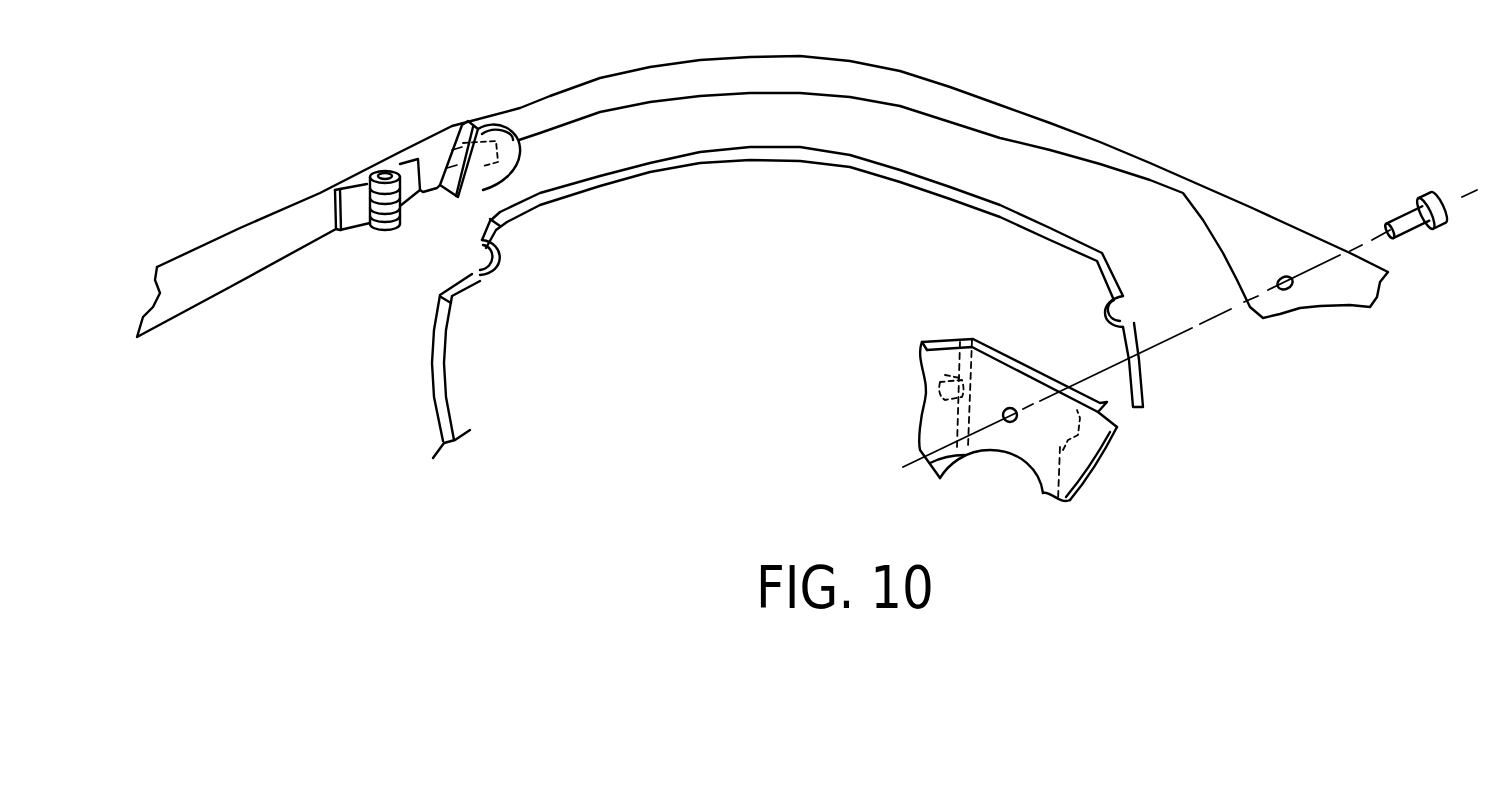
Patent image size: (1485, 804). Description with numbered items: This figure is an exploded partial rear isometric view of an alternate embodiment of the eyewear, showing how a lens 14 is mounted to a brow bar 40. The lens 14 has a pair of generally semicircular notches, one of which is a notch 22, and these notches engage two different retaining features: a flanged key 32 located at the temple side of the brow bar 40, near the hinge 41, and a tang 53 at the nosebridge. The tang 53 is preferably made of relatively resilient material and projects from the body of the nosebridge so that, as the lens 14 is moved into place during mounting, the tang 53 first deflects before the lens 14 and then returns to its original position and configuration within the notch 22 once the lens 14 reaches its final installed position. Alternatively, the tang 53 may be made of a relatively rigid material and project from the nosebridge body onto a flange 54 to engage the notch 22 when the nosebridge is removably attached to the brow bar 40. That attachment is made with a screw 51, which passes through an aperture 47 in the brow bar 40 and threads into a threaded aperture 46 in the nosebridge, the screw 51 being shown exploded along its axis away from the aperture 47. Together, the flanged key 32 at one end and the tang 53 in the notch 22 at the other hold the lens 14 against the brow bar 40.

The lens 14 is at (696, 269).
The notch 22 is at (468, 256).
The flanged key 32 is at (500, 123).
The brow bar 40 is at (1167, 170).
The hinge 41 is at (386, 168).
The threaded aperture 46 is at (1030, 468).
The aperture 47 is at (1278, 282).
The screw 51 is at (1426, 198).
The tang 53 is at (927, 376).
The flange 54 is at (926, 340).